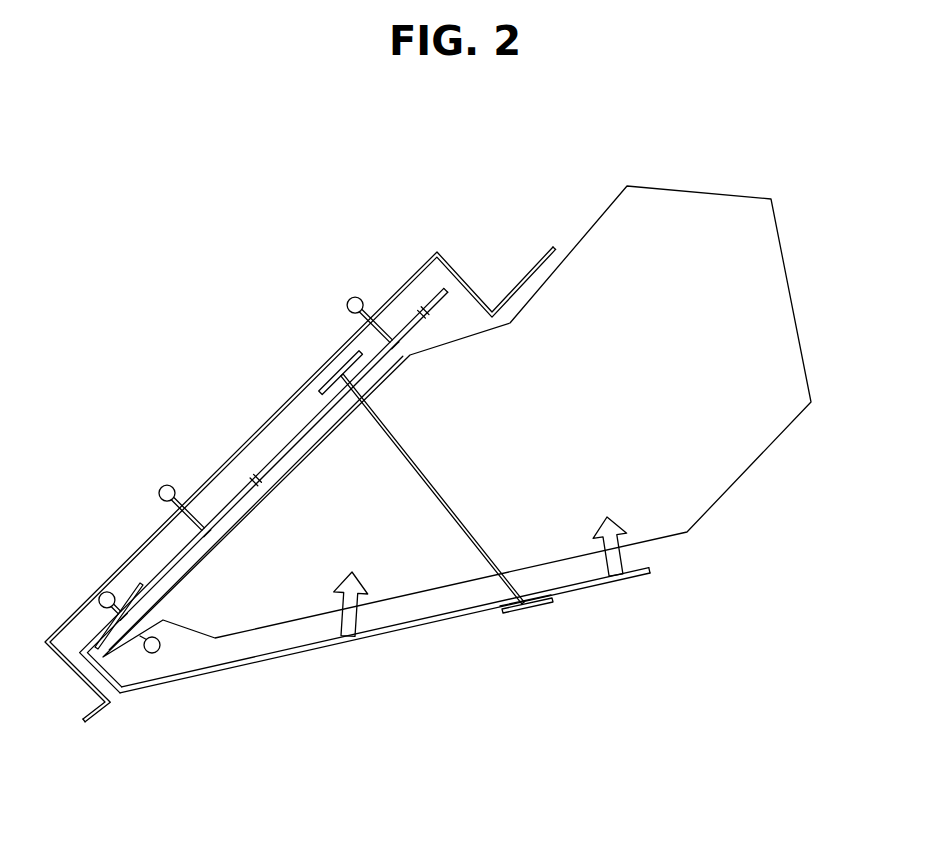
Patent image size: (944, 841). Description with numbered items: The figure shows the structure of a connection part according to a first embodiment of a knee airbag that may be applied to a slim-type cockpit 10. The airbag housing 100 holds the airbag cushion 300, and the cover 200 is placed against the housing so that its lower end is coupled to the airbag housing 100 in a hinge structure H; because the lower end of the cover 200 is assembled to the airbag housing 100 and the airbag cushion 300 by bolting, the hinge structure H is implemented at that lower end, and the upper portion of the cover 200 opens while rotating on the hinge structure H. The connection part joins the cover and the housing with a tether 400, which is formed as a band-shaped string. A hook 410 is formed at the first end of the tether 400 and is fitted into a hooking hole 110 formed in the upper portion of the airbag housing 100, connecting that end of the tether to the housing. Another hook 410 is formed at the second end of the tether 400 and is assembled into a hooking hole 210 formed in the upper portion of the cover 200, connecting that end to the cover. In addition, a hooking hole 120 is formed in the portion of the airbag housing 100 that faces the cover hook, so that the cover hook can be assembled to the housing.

The slim-type cockpit 10 is at (427, 310).
The airbag housing 100 is at (223, 512).
The hooking hole 110 is at (356, 356).
The hooking hole 120 is at (401, 287).
The cover 200 is at (408, 630).
The hooking hole 210 is at (515, 614).
The airbag cushion 300 is at (723, 468).
The tether 400 is at (428, 478).
The hook 410 is at (338, 384).
The hinge structure H is at (119, 698).